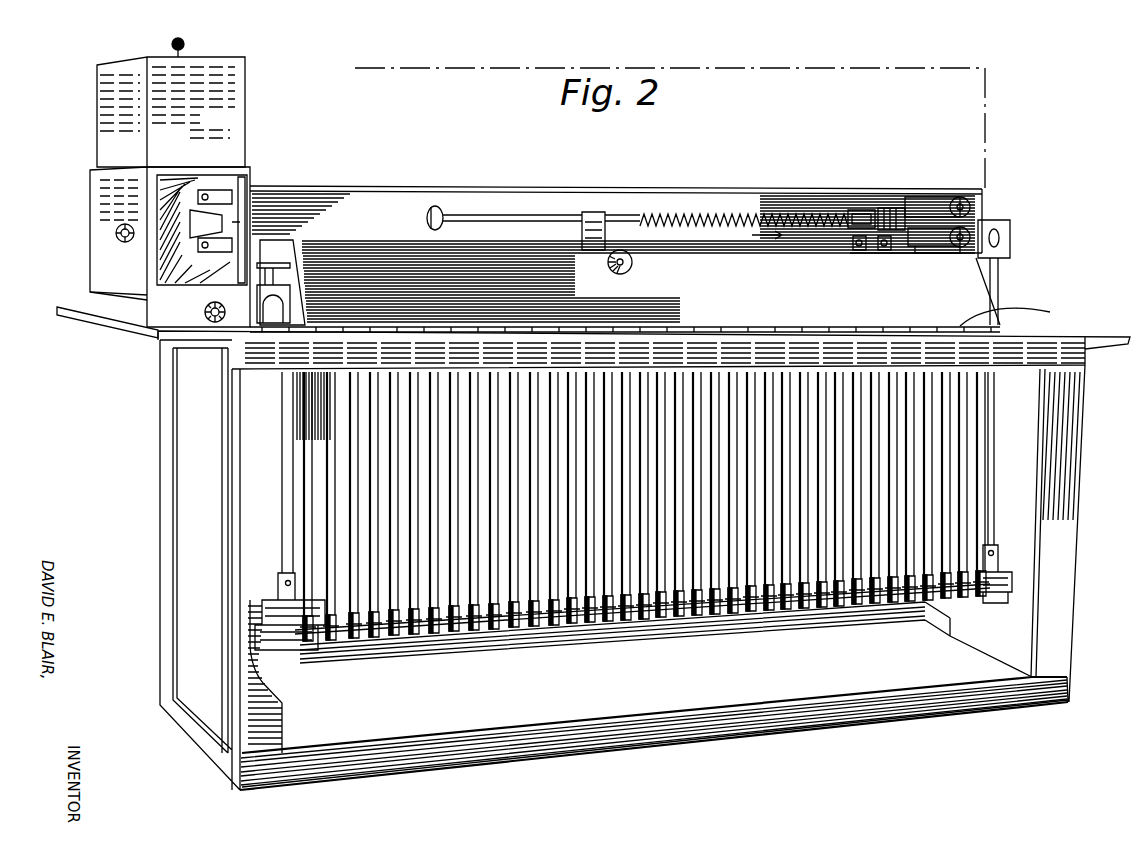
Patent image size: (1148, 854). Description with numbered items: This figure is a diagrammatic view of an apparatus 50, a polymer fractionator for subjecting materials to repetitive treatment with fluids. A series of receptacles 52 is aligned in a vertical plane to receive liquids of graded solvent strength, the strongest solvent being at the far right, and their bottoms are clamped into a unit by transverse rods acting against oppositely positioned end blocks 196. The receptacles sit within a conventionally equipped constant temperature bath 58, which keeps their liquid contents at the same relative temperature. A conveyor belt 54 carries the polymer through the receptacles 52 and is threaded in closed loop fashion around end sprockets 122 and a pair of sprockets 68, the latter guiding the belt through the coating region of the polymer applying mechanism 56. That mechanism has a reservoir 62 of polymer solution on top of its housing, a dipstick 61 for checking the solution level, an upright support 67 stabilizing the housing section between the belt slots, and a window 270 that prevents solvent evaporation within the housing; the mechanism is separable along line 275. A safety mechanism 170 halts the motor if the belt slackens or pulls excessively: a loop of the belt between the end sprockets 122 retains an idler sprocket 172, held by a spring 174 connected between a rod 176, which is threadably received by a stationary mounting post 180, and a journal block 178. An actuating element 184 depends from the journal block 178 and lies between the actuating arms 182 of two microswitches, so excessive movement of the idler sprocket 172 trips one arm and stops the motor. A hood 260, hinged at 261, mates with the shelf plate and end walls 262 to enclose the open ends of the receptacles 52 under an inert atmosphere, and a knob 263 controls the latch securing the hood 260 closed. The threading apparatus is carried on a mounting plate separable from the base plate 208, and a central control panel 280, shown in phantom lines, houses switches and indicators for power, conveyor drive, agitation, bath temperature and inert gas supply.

The apparatus 50 is at (1044, 119).
The receptacles 52 is at (645, 472).
The conveyor belt 54 is at (557, 190).
The polymer applying mechanism 56 is at (65, 201).
The constant temperature bath 58 is at (1047, 608).
The dipstick 61 is at (184, 44).
The reservoir 62 is at (97, 108).
The upright support 67 is at (246, 180).
The sprockets 68 is at (205, 190).
The end sprockets 122 is at (995, 226).
The safety mechanism 170 is at (732, 234).
The idler sprocket 172 is at (920, 198).
The spring 174 is at (708, 222).
The rod 176 is at (466, 215).
The journal block 178 is at (895, 208).
The stationary mounting post 180 is at (600, 212).
The actuating arms 182 is at (884, 250).
The actuating element 184 is at (860, 210).
The end blocks 196 is at (300, 653).
The base plate 208 is at (1095, 347).
The hood 260 is at (1000, 272).
The hinge 261 is at (1024, 292).
The end walls 262 is at (280, 252).
The knob 263 is at (632, 272).
The window 270 is at (158, 253).
The separation line 275 is at (160, 304).
The central control panel 280 is at (880, 58).